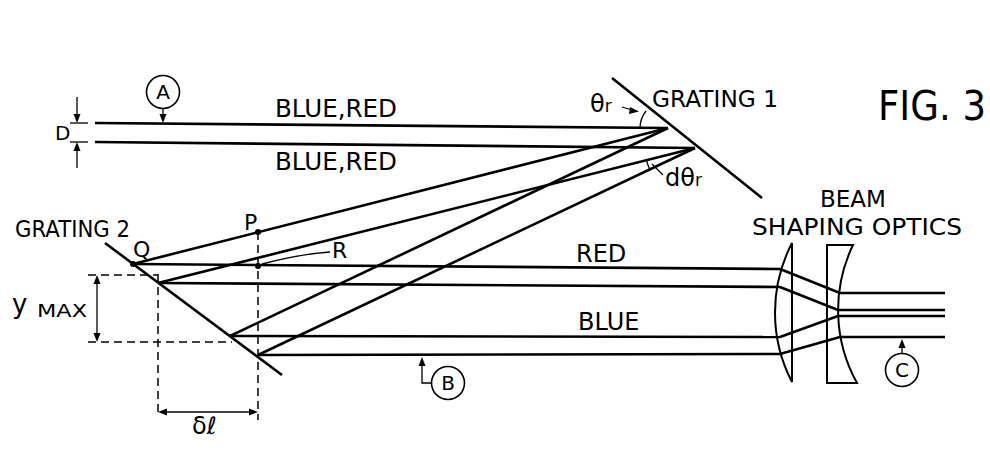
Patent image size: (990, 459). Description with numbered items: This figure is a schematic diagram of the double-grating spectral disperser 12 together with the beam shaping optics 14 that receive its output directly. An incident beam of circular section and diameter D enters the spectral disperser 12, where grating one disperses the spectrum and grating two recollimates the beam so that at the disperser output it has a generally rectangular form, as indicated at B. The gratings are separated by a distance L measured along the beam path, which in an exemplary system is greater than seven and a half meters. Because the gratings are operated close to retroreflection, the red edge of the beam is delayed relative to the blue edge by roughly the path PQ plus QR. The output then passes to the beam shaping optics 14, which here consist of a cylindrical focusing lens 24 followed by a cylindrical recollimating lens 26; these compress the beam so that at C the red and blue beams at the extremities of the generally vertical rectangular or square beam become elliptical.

The spectral disperser 12 is at (294, 215).
The beam shaping optics 14 is at (913, 277).
The cylindrical focusing lens 24 is at (797, 368).
The cylindrical recollimating lens 26 is at (842, 387).